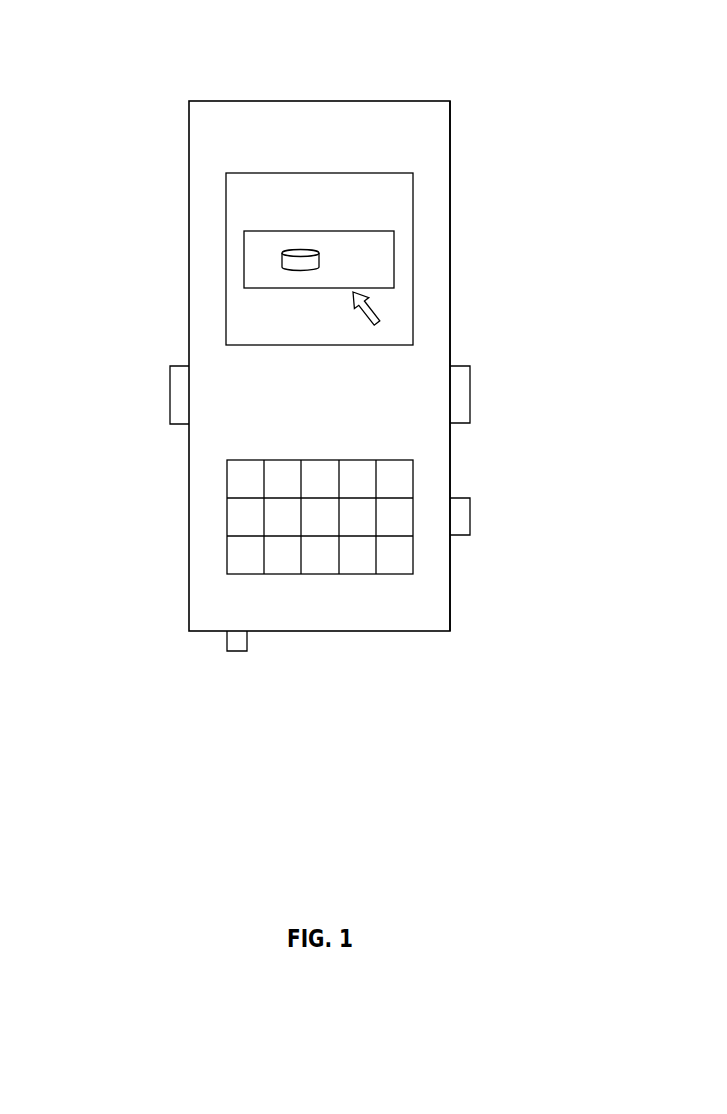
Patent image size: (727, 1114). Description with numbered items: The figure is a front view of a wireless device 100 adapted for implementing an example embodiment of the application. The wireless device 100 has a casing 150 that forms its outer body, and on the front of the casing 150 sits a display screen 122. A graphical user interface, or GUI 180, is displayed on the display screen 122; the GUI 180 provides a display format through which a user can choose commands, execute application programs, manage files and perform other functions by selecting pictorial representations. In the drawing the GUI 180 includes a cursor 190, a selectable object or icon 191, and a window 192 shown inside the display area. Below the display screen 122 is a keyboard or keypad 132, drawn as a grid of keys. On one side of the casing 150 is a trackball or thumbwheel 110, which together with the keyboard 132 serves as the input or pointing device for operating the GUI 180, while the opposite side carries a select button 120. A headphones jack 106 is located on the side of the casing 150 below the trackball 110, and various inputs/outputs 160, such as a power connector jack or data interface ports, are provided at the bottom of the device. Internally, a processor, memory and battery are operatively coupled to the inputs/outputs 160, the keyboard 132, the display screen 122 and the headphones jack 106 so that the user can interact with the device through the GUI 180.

The wireless device 100 is at (282, 83).
The casing 150 is at (450, 128).
The graphical user interface 180 is at (264, 215).
The display screen 122 is at (375, 211).
The window 192 is at (375, 250).
The selectable object or icon 191 is at (264, 254).
The cursor 190 is at (375, 308).
The select button 120 is at (169, 403).
The trackball or thumbwheel 110 is at (470, 403).
The headphones jack 106 is at (470, 497).
The keyboard 132 is at (245, 517).
The inputs/outputs 160 is at (227, 669).